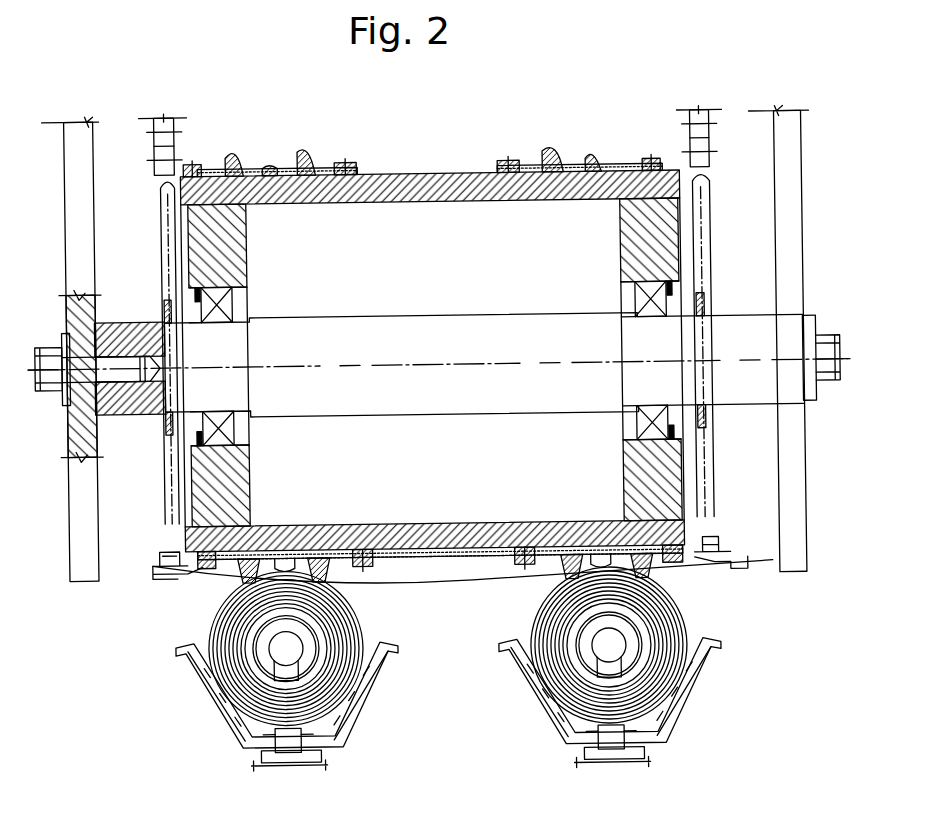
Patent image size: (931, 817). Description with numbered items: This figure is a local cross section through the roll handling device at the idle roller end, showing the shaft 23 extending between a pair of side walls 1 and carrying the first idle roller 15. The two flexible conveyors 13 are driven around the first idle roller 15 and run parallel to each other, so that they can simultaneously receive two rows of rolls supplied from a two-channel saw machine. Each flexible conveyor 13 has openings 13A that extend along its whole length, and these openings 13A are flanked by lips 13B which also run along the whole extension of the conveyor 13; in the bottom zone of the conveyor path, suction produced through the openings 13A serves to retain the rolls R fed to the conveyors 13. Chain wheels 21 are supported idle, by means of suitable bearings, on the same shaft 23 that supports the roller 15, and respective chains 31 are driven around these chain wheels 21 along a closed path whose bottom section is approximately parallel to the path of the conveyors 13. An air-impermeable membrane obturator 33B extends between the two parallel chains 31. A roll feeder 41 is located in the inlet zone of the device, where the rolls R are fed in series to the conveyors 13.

The side wall 1 is at (92, 520).
The flexible conveyor 13 is at (534, 143).
The opening 13A is at (292, 523).
The lip 13B is at (712, 600).
The first idle roller 15 is at (440, 172).
The chain wheel 21 is at (163, 232).
The shaft 23 is at (486, 316).
The chain 31 is at (178, 133).
The membrane obturator 33B is at (464, 584).
The roll feeder 41 is at (268, 748).
The roll R is at (345, 668).